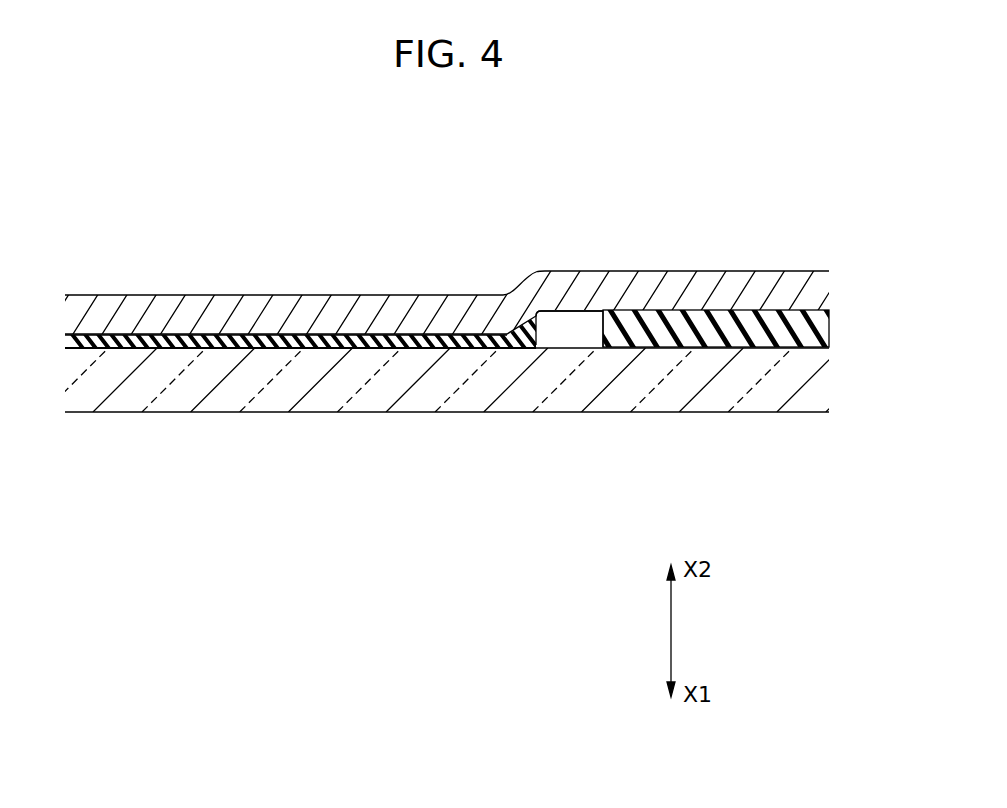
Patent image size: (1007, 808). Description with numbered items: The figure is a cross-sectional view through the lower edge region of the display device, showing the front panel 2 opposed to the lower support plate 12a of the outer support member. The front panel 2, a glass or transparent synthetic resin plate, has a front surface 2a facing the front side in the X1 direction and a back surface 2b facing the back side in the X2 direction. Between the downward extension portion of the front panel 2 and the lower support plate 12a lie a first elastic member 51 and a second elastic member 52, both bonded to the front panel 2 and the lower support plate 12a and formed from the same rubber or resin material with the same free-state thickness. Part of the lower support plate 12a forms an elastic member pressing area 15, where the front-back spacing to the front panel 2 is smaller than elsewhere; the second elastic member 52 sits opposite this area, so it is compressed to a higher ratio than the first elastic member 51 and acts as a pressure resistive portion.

The front panel 2 is at (413, 395).
The front surface 2a is at (473, 412).
The back surface 2b is at (555, 345).
The elastic member pressing area 15 is at (292, 295).
The lower support plate 12a is at (652, 282).
The first elastic member 51 is at (723, 334).
The second elastic member 52 is at (265, 342).